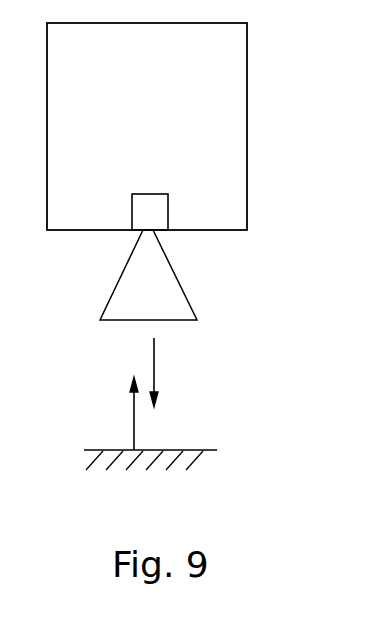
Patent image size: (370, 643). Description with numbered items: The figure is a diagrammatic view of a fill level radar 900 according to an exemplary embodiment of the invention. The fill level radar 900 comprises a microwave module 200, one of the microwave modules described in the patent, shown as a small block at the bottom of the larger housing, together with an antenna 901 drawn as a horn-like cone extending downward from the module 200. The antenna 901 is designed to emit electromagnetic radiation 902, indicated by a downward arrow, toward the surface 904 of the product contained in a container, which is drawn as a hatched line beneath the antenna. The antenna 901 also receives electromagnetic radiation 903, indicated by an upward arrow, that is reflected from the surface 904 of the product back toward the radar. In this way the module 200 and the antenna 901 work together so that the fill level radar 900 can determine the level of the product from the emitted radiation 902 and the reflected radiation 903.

The fill level radar 900 is at (250, 253).
The microwave module 200 is at (169, 206).
The antenna 901 is at (186, 290).
The emitted electromagnetic radiation 902 is at (156, 368).
The reflected electromagnetic radiation 903 is at (132, 420).
The surface of the product 904 is at (209, 449).